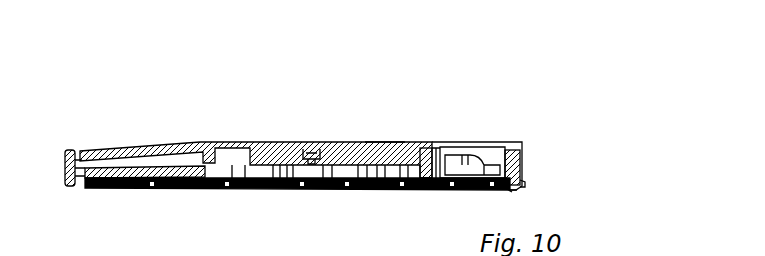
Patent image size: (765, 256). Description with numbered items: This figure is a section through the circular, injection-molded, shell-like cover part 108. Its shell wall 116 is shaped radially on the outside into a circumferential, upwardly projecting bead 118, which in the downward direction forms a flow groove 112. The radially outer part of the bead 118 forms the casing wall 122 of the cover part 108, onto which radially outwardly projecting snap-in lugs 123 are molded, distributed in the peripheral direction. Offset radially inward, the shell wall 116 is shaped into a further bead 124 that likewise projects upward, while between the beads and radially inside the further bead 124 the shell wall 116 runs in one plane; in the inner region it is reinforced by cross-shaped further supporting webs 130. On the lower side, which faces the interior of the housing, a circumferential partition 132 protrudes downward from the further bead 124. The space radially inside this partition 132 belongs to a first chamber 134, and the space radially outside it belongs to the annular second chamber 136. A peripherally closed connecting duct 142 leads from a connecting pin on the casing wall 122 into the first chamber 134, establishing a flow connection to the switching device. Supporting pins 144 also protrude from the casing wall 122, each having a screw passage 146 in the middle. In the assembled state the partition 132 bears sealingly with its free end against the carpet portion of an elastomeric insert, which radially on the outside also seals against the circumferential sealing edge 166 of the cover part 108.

The cover part 108 is at (199, 134).
The further supporting webs 130 is at (270, 140).
The screw passage 146 is at (316, 148).
The supporting pins 144 is at (386, 142).
The further bead 124 is at (421, 146).
The shell wall 116 is at (443, 142).
The bead 118 is at (516, 148).
The casing wall 122 is at (524, 153).
The flow groove 112 is at (525, 168).
The snap-in lugs 123 is at (530, 187).
The sealing edge 166 is at (517, 187).
The second chamber 136 is at (518, 192).
The connecting duct 142 is at (152, 163).
The first chamber 134 is at (275, 190).
The partition 132 is at (400, 190).